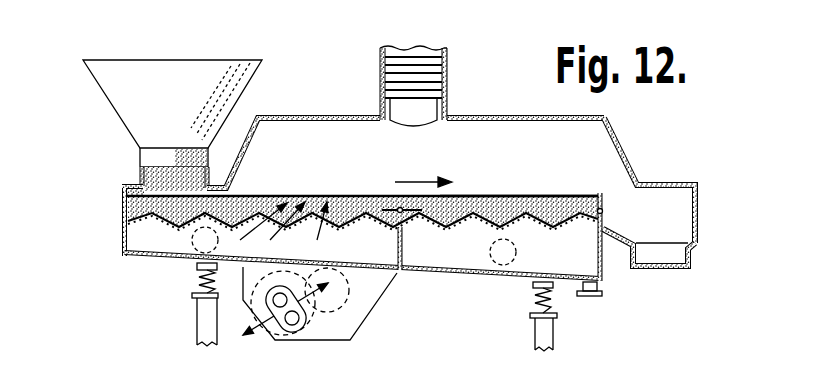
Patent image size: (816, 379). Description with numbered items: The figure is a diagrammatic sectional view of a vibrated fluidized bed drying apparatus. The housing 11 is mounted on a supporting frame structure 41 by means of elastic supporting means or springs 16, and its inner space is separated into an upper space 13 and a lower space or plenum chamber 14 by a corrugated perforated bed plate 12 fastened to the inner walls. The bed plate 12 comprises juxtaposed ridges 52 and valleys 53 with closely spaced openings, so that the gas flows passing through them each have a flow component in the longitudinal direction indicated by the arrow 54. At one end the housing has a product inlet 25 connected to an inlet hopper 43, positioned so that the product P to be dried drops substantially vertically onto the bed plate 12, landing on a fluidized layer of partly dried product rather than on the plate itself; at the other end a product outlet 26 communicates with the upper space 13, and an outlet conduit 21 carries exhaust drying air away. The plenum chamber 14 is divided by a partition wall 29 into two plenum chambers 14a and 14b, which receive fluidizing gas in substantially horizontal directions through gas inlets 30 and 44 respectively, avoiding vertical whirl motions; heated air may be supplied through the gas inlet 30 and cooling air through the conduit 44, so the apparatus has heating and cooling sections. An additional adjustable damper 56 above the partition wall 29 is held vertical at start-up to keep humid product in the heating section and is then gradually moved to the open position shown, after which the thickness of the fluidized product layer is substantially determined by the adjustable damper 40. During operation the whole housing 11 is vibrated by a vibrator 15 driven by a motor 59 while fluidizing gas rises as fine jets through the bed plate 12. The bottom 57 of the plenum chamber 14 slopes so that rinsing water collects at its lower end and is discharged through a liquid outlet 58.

The inlet hopper 43 is at (107, 100).
The product inlet 25 is at (142, 175).
The upper space 13 is at (337, 133).
The housing 11 is at (537, 110).
The adjustable damper 40 is at (602, 197).
The outlet conduit 21 is at (380, 62).
The product outlet 26 is at (690, 259).
The product P is at (122, 207).
The valleys 53 is at (470, 197).
The ridges 52 is at (527, 198).
The perforated bed plate 12 is at (170, 222).
The additional adjustable damper 56 is at (385, 195).
The arrow 54 is at (413, 178).
The plenum chamber 14a is at (148, 240).
The lower space 14 is at (483, 263).
The plenum chamber 14b is at (450, 255).
The partition wall 29 is at (398, 252).
The gas inlet 30 is at (189, 249).
The gas inlet 44 is at (517, 248).
The motor 59 is at (352, 339).
The vibrator 15 is at (290, 330).
The springs 16 is at (198, 282).
The supporting frame structure 41 is at (535, 338).
The bottom 57 is at (605, 285).
The liquid outlet 58 is at (603, 298).